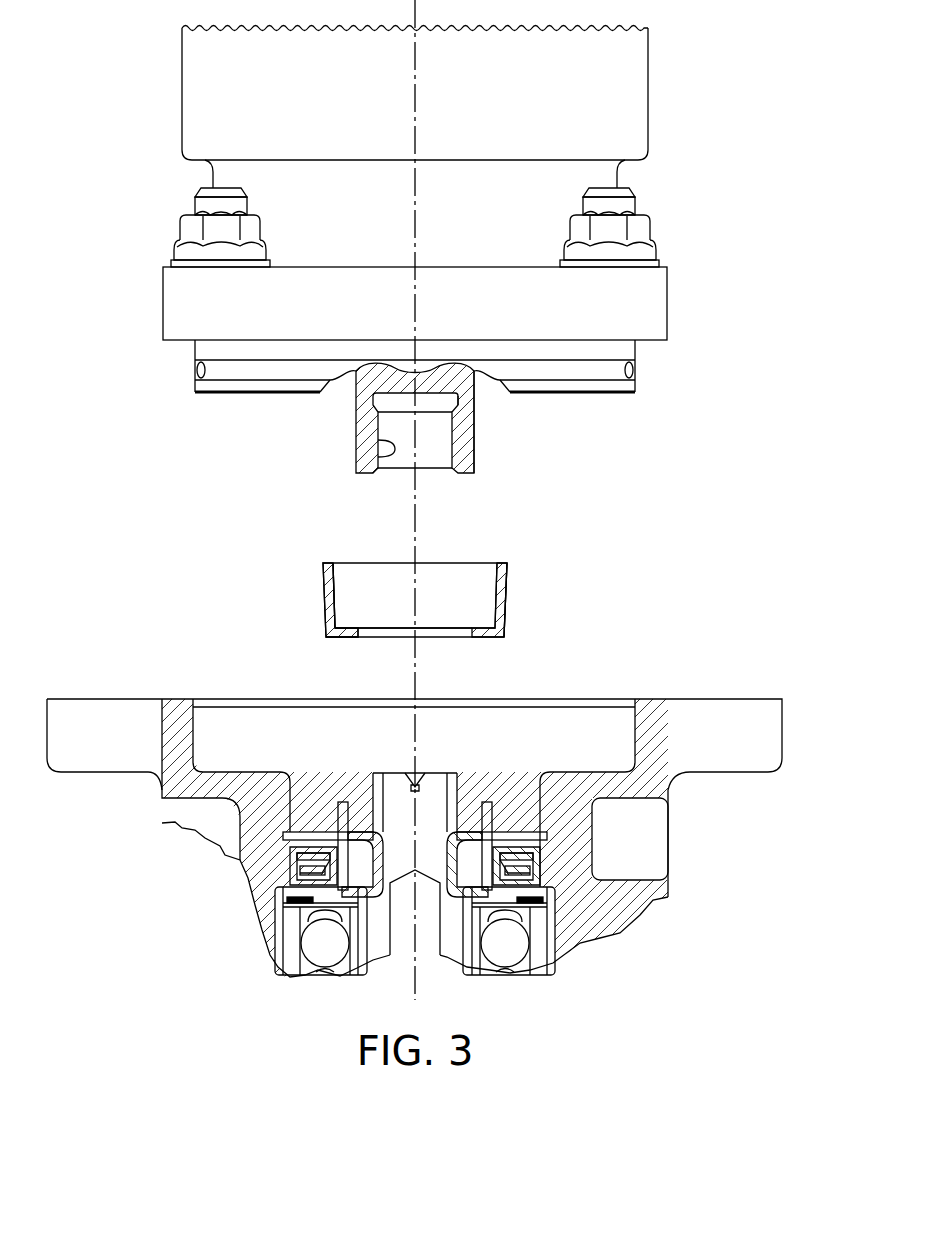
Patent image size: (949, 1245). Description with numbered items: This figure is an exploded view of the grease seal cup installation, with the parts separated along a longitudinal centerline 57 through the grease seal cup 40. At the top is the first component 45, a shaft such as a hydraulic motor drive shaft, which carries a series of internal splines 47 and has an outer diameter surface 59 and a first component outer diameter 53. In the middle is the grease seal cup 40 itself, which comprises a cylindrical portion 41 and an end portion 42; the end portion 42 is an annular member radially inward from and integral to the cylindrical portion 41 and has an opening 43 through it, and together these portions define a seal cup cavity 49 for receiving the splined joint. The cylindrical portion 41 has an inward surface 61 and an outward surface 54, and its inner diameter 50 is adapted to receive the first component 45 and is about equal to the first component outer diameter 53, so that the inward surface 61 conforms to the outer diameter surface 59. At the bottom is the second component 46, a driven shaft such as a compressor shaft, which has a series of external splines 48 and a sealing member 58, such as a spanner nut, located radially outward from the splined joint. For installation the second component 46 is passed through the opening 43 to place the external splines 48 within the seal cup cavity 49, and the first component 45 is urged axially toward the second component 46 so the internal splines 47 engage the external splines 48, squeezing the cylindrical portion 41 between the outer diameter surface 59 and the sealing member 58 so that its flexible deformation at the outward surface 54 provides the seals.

The longitudinal centerline 57 is at (413, 95).
The first component outer diameter 53 is at (474, 370).
The outer diameter surface 59 is at (356, 420).
The internal splines 47 is at (378, 458).
The first component 45 is at (472, 432).
The inner diameter 50 is at (498, 563).
The seal cup cavity 49 is at (430, 610).
The outward surface 54 is at (323, 597).
The inward surface 61 is at (333, 578).
The cylindrical portion 41 is at (507, 573).
The grease seal cup 40 is at (507, 603).
The end portion 42 is at (347, 637).
The opening 43 is at (440, 637).
The external splines 48 is at (375, 787).
The second component 46 is at (443, 790).
The sealing member 58 is at (345, 830).